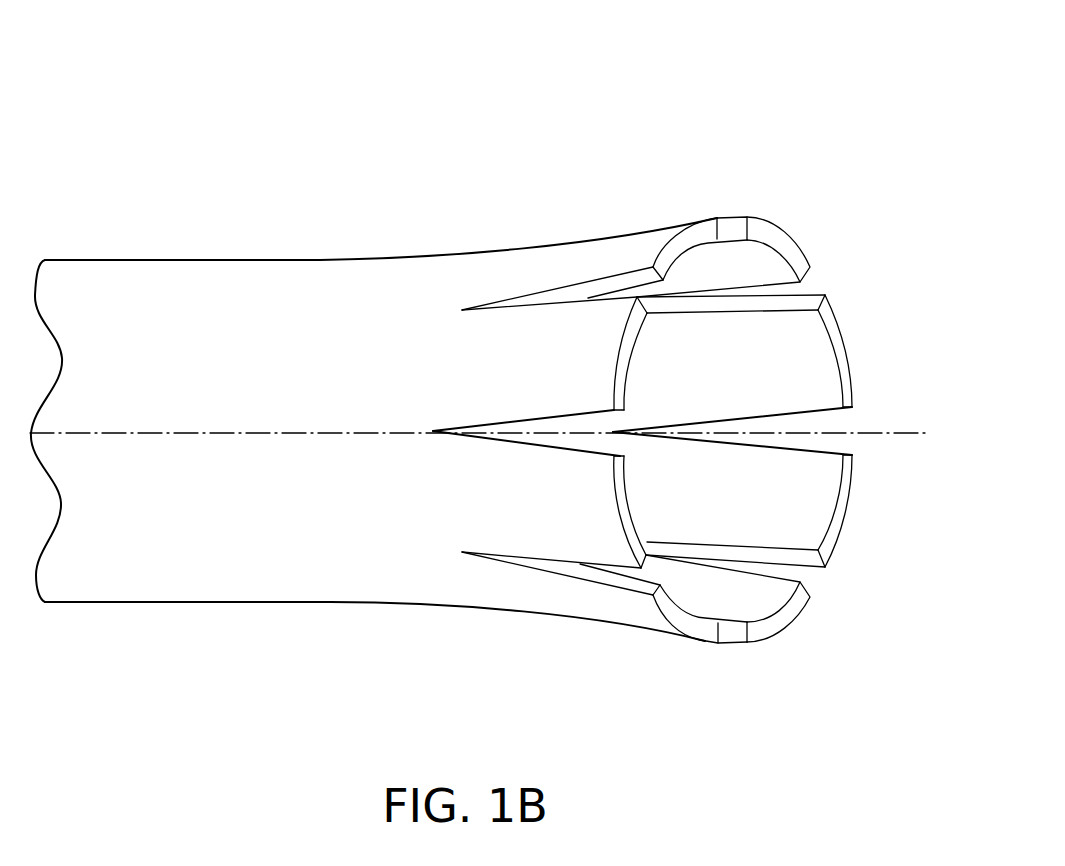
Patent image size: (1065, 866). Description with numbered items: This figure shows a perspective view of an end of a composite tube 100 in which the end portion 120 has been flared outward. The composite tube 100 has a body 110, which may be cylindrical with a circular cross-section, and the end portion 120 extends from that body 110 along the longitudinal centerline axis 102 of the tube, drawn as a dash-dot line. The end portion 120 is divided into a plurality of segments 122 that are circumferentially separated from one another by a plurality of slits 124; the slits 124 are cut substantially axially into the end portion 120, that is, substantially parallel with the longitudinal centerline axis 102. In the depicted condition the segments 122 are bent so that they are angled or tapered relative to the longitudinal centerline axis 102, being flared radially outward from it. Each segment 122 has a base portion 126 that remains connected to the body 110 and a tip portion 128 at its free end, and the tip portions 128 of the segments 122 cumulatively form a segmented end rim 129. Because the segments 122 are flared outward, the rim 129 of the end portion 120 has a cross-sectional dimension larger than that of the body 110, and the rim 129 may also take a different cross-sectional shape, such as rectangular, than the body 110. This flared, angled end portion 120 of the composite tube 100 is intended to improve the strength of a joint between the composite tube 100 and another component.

The composite tube 100 is at (204, 142).
The longitudinal centerline axis 102 is at (890, 433).
The body 110 is at (313, 333).
The end portion 120 is at (858, 232).
The segments 122 is at (763, 588).
The slits 124 is at (830, 594).
The base portions 126 is at (448, 368).
The tip portions 128 is at (612, 359).
The segmented end rim 129 is at (835, 338).